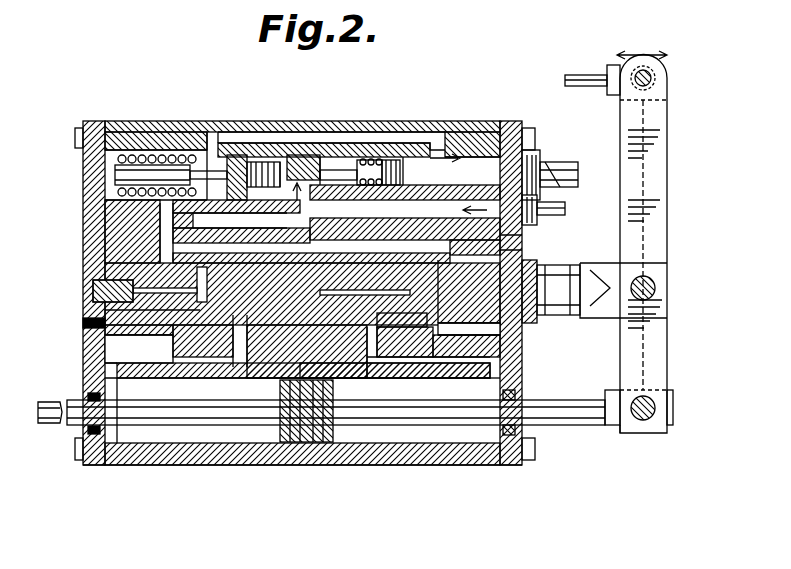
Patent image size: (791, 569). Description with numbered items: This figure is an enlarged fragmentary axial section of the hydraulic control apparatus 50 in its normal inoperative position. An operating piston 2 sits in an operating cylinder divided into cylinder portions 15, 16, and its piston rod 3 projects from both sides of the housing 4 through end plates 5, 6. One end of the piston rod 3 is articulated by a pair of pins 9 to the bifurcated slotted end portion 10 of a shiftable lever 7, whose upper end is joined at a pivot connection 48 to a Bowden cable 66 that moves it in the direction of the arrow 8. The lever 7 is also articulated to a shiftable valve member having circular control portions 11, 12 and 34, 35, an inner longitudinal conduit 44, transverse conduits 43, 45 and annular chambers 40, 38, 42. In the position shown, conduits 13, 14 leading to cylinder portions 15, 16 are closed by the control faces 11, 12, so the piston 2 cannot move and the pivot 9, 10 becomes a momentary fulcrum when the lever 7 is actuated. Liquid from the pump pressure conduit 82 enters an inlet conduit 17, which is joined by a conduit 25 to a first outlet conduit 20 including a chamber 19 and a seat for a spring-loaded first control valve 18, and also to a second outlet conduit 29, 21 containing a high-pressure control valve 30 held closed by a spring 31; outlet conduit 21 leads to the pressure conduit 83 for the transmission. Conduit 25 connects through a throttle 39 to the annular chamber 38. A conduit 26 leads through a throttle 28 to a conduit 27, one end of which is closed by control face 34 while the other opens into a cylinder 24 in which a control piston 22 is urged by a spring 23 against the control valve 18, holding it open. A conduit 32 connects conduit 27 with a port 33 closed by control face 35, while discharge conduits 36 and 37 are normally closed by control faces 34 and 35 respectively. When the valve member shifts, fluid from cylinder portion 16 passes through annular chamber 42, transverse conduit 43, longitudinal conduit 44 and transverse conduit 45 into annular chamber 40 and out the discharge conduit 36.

The operating piston 2 is at (306, 446).
The piston rod 3 is at (442, 427).
The housing 4 is at (150, 125).
The end plate 5 is at (95, 121).
The end plate 6 is at (514, 124).
The shiftable lever 7 is at (667, 156).
The arrow 8 is at (643, 54).
The pins 9 is at (656, 401).
The bifurcated slotted end portion 10 is at (655, 428).
The circular control portion 11 is at (238, 322).
The circular control portion 12 is at (360, 325).
The conduit 13 is at (118, 437).
The conduit 14 is at (417, 360).
The cylinder portion 15 is at (108, 462).
The cylinder portion 16 is at (480, 440).
The inlet conduit 17 is at (478, 200).
The first control valve 18 is at (237, 160).
The chamber 19 is at (212, 135).
The first outlet conduit 20 is at (350, 137).
The second outlet conduit 21 is at (478, 135).
The control piston 22 is at (181, 188).
The spring 23 is at (133, 155).
The cylinder 24 is at (115, 172).
The conduit 25 is at (266, 165).
The conduit 26 is at (178, 207).
The conduit 27 is at (178, 236).
The throttle 28 is at (200, 221).
The second outlet conduit 29 is at (330, 168).
The second high-pressure control valve 30 is at (370, 160).
The spring 31 is at (394, 160).
The conduit 32 is at (537, 222).
The port 33 is at (522, 244).
The circular control portion 34 is at (95, 285).
The circular control portion 35 is at (443, 263).
The conduit 36 is at (100, 346).
The conduit 37 is at (522, 330).
The annular chamber 38 is at (305, 325).
The throttle 39 is at (293, 185).
The annular chamber 40 is at (140, 342).
The annular chamber 42 is at (365, 360).
The transverse conduit 43 is at (405, 360).
The inner longitudinal conduit 44 is at (88, 320).
The transverse conduit 45 is at (200, 320).
The pivot connection 48 is at (652, 76).
The hydraulic control apparatus 50 is at (198, 480).
The Bowden cable 66 is at (585, 75).
The pressure conduit 82 is at (562, 208).
The pressure conduit 83 is at (558, 167).